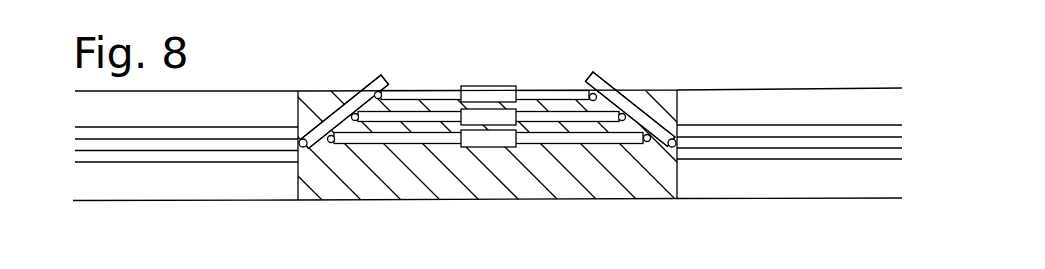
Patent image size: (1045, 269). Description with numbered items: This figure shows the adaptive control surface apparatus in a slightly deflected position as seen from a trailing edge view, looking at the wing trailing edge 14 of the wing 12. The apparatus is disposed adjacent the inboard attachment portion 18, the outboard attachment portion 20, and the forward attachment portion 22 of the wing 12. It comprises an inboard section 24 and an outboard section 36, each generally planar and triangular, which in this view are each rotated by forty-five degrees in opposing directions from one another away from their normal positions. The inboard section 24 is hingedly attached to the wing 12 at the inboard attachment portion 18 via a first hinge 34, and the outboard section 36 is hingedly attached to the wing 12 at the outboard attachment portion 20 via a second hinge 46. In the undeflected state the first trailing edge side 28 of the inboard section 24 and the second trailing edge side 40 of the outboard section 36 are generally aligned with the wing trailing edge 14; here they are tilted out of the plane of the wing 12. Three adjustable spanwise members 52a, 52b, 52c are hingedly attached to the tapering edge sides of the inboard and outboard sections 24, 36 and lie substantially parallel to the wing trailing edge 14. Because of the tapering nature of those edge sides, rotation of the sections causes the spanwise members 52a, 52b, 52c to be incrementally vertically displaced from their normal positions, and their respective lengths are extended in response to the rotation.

The wing 12 is at (208, 107).
The wing trailing edge 14 is at (208, 147).
The inboard attachment portion 18 is at (672, 177).
The outboard attachment portion 20 is at (313, 193).
The forward attachment portion 22 is at (497, 187).
The inboard section 24 is at (602, 78).
The first trailing edge side 28 is at (632, 113).
The first hinge 34 is at (672, 146).
The outboard section 36 is at (380, 73).
The second trailing edge side 40 is at (344, 109).
The second hinge 46 is at (302, 146).
The spanwise member 52a is at (437, 95).
The spanwise member 52b is at (547, 117).
The spanwise member 52c is at (362, 144).